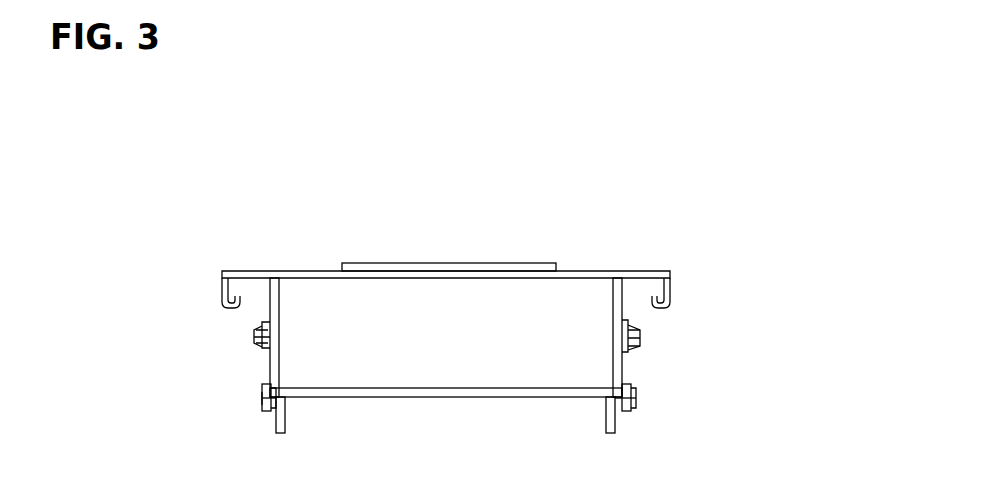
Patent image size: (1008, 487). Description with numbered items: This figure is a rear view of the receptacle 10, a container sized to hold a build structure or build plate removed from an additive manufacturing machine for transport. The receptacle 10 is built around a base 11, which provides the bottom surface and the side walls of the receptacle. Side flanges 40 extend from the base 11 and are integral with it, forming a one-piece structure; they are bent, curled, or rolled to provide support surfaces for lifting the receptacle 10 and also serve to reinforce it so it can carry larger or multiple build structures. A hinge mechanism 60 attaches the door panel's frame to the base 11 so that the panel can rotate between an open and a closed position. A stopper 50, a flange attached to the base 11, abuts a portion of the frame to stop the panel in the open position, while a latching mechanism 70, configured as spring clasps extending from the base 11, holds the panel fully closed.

The receptacle 10 is at (142, 142).
The base 11 is at (370, 388).
The side flanges 40 is at (220, 296).
The stopper 50 is at (612, 432).
The hinge mechanism 60 is at (262, 402).
The latching mechanism 70 is at (638, 340).